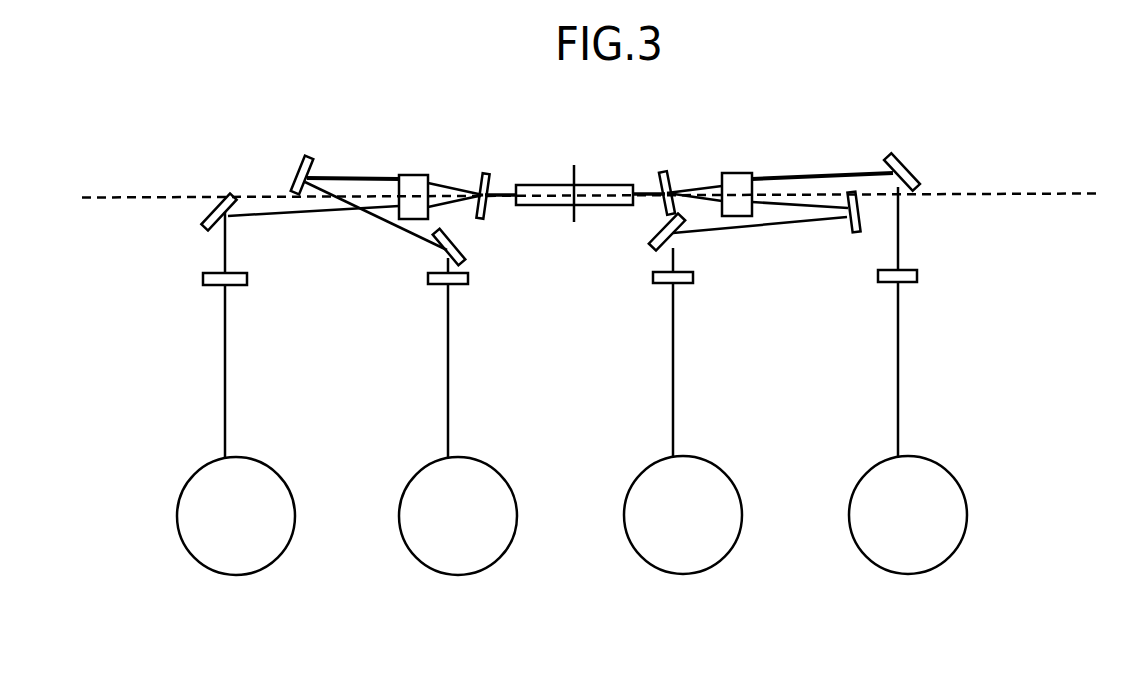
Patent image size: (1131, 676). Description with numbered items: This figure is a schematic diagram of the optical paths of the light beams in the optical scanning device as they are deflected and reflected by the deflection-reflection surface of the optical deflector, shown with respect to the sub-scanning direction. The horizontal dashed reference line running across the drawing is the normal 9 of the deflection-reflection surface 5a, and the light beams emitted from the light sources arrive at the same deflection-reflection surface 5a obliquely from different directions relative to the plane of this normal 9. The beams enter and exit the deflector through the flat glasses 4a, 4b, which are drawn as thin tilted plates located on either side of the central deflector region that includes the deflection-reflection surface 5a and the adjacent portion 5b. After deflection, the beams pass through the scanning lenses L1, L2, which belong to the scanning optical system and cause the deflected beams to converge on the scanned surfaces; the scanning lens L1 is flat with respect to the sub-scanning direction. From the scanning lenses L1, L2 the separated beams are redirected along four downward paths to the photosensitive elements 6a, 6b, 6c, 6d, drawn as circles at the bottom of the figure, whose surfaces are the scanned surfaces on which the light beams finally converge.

The normal 9 is at (1013, 192).
The scanning lens L1 is at (749, 158).
The scanning lens L2 is at (404, 165).
The flat glass 4a is at (478, 185).
The flat glass 4b is at (673, 178).
The deflection-reflection surface 5a is at (513, 187).
The second optical element 5b is at (553, 187).
The photosensitive element 6a is at (232, 563).
The photosensitive element 6b is at (458, 562).
The photosensitive element 6c is at (690, 562).
The photosensitive element 6d is at (905, 560).